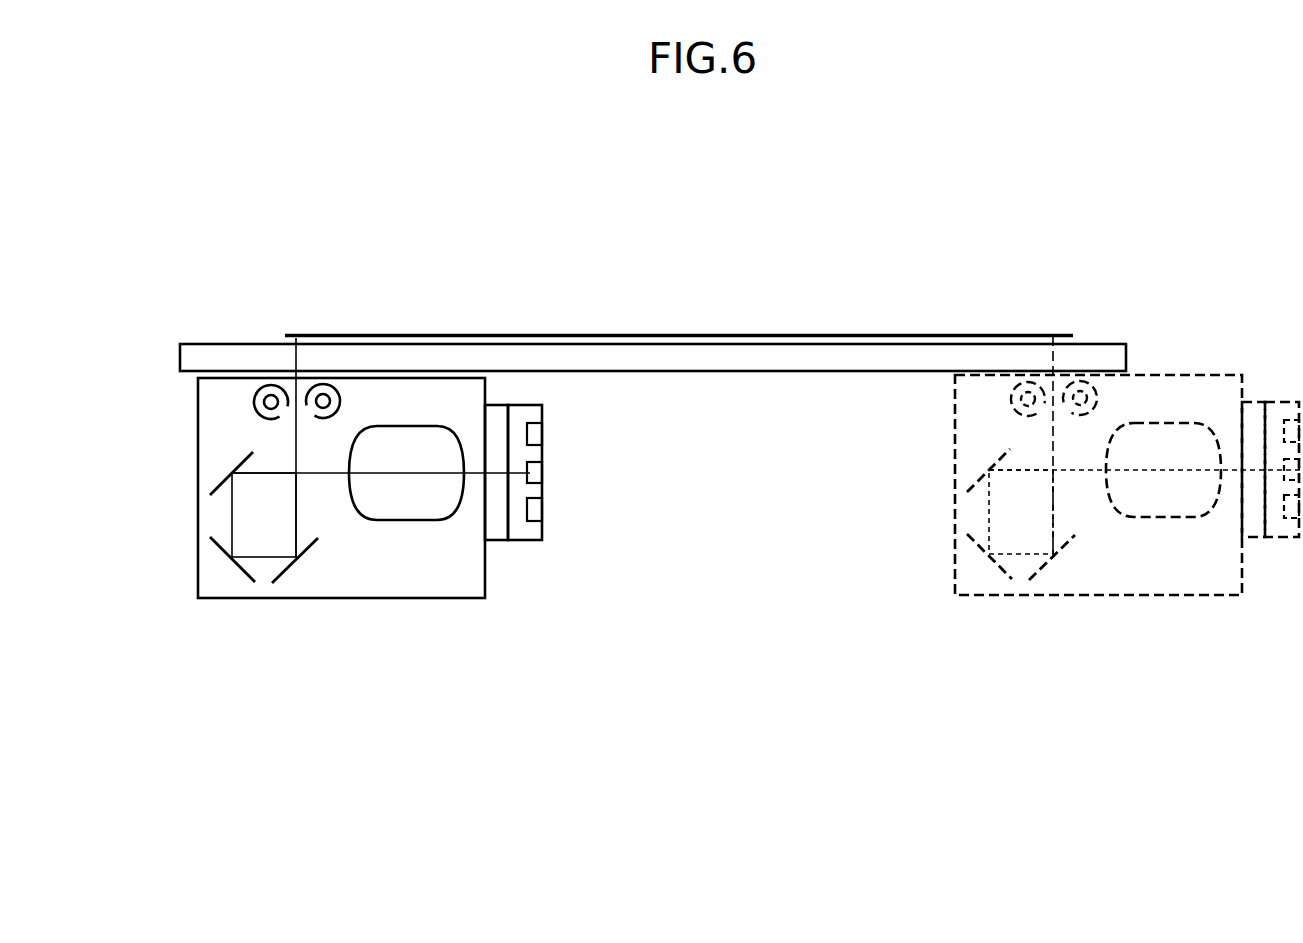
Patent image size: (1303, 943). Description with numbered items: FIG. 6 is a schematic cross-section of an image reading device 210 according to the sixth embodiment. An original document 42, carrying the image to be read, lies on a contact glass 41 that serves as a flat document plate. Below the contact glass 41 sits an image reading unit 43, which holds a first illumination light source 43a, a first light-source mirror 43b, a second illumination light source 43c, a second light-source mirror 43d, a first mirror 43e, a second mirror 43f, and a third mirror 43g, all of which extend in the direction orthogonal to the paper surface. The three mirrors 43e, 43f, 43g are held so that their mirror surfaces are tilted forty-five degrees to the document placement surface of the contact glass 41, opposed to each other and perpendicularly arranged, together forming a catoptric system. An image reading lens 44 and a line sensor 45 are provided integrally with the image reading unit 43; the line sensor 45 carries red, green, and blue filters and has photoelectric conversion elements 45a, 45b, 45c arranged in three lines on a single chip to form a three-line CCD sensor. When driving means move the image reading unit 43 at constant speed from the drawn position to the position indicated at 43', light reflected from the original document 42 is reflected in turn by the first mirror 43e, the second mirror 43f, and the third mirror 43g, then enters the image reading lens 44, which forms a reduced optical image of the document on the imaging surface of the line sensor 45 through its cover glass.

The contact glass 41 is at (215, 355).
The original document 42 is at (747, 333).
The image reading device 210 is at (967, 298).
The image reading unit 43 is at (366, 466).
The first illumination light source 43a is at (263, 405).
The first light-source mirror 43b is at (258, 418).
The second illumination light source 43c is at (313, 400).
The second light-source mirror 43d is at (345, 410).
The first mirror 43e is at (285, 572).
The second mirror 43f is at (225, 552).
The third mirror 43g is at (215, 484).
The image reading lens 44 is at (383, 507).
The line sensor 45 is at (522, 542).
The photoelectric conversion element 45a is at (535, 433).
The photoelectric conversion element 45b is at (535, 471).
The photoelectric conversion element 45c is at (535, 512).
The position of image reading unit 43' is at (1129, 524).